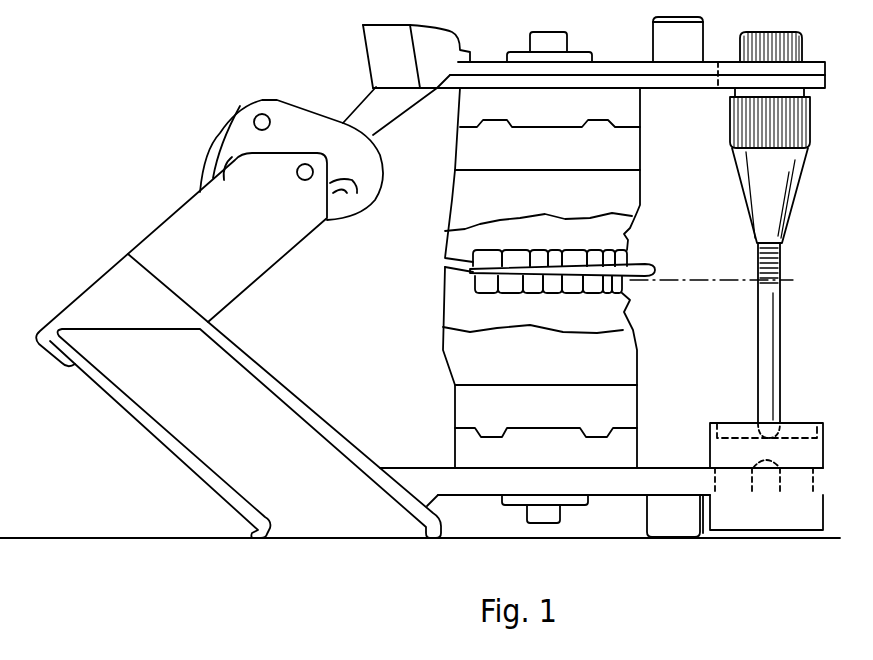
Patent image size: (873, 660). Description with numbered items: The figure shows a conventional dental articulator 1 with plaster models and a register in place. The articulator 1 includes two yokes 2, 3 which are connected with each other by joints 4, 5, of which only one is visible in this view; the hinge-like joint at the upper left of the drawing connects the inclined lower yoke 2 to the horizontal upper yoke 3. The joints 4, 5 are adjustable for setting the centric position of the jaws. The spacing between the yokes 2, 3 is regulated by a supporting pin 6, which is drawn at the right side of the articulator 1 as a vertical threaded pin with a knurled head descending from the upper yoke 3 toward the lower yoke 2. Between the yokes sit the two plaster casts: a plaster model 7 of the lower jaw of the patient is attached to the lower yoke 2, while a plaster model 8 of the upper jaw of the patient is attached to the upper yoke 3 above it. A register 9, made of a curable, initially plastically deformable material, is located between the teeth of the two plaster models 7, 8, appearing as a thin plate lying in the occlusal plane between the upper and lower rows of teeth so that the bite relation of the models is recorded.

The articulator 1 is at (150, 166).
The yoke 2 is at (256, 258).
The yoke 3 is at (676, 80).
The joint 4 is at (296, 124).
The joint 5 is at (343, 186).
The supporting pin 6 is at (768, 353).
The plaster model 7 is at (612, 308).
The plaster model 8 is at (612, 234).
The register 9 is at (653, 267).